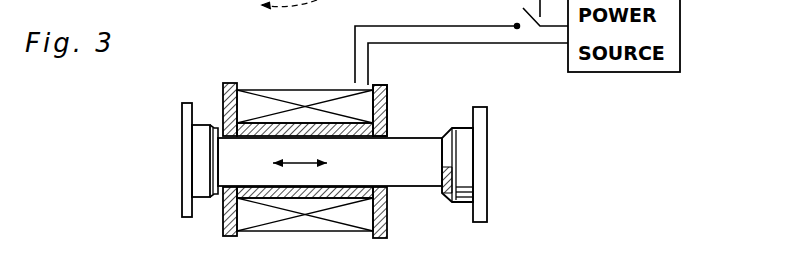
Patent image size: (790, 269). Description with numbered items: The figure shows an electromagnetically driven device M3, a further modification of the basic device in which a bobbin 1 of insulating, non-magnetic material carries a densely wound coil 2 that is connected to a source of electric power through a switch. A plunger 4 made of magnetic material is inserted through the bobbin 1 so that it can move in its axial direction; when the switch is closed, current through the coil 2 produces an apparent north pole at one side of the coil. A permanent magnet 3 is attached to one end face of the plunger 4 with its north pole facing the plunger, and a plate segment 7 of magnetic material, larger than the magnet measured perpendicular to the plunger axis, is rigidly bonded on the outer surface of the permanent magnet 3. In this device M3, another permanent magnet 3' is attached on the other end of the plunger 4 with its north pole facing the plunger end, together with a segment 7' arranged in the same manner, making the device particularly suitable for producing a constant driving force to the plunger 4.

The bobbin 1 is at (388, 102).
The coil 2 is at (338, 98).
The electromagnetically driven device M3 is at (298, 87).
The permanent magnet 3 is at (145, 162).
The permanent magnet 3' is at (502, 170).
The plunger 4 is at (414, 148).
The plate segment 7 is at (132, 160).
The segment 7' is at (518, 164).